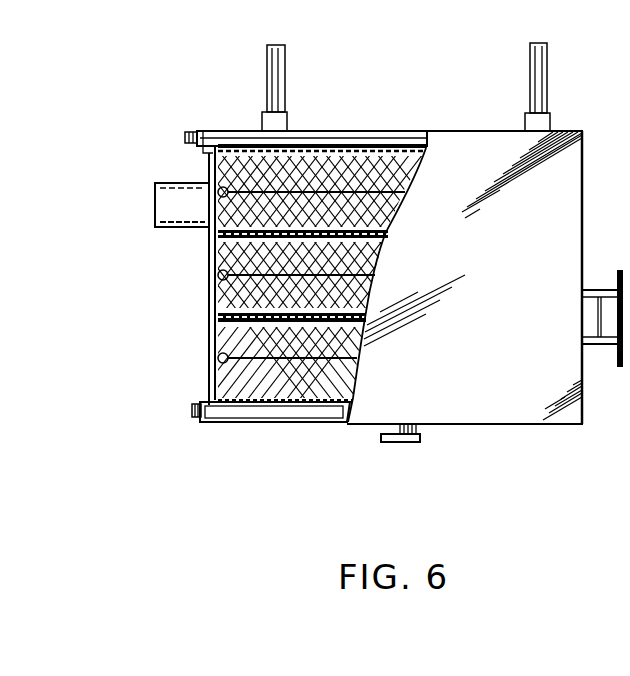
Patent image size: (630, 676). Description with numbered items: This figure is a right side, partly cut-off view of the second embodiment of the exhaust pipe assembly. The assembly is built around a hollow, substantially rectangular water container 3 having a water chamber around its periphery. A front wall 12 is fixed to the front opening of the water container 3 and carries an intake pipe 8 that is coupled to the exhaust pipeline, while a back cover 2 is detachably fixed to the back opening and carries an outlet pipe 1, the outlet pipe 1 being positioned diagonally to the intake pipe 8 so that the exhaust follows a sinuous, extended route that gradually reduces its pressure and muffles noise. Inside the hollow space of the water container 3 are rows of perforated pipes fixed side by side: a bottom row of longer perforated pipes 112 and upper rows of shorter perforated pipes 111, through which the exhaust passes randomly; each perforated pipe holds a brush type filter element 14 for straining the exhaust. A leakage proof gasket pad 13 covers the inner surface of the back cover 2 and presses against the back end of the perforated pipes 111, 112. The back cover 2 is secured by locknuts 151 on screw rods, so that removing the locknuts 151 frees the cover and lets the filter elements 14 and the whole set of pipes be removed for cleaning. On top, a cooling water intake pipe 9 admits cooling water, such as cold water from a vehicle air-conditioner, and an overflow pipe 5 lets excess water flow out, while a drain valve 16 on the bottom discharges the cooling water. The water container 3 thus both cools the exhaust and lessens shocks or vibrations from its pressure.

The outlet pipe 1 is at (177, 204).
The back cover 2 is at (210, 392).
The water container 3 is at (468, 158).
The overflow pipe 5 is at (280, 55).
The intake pipe 8 is at (602, 355).
The cooling water intake pipe 9 is at (533, 82).
The front wall 12 is at (582, 163).
The leakage proof gasket pad 13 is at (212, 133).
The brush type filter element 14 is at (213, 345).
The drain valve 16 is at (401, 442).
The shorter perforated pipes 111 is at (207, 150).
The longer perforated pipes 112 is at (210, 321).
The locknuts 151 is at (188, 132).